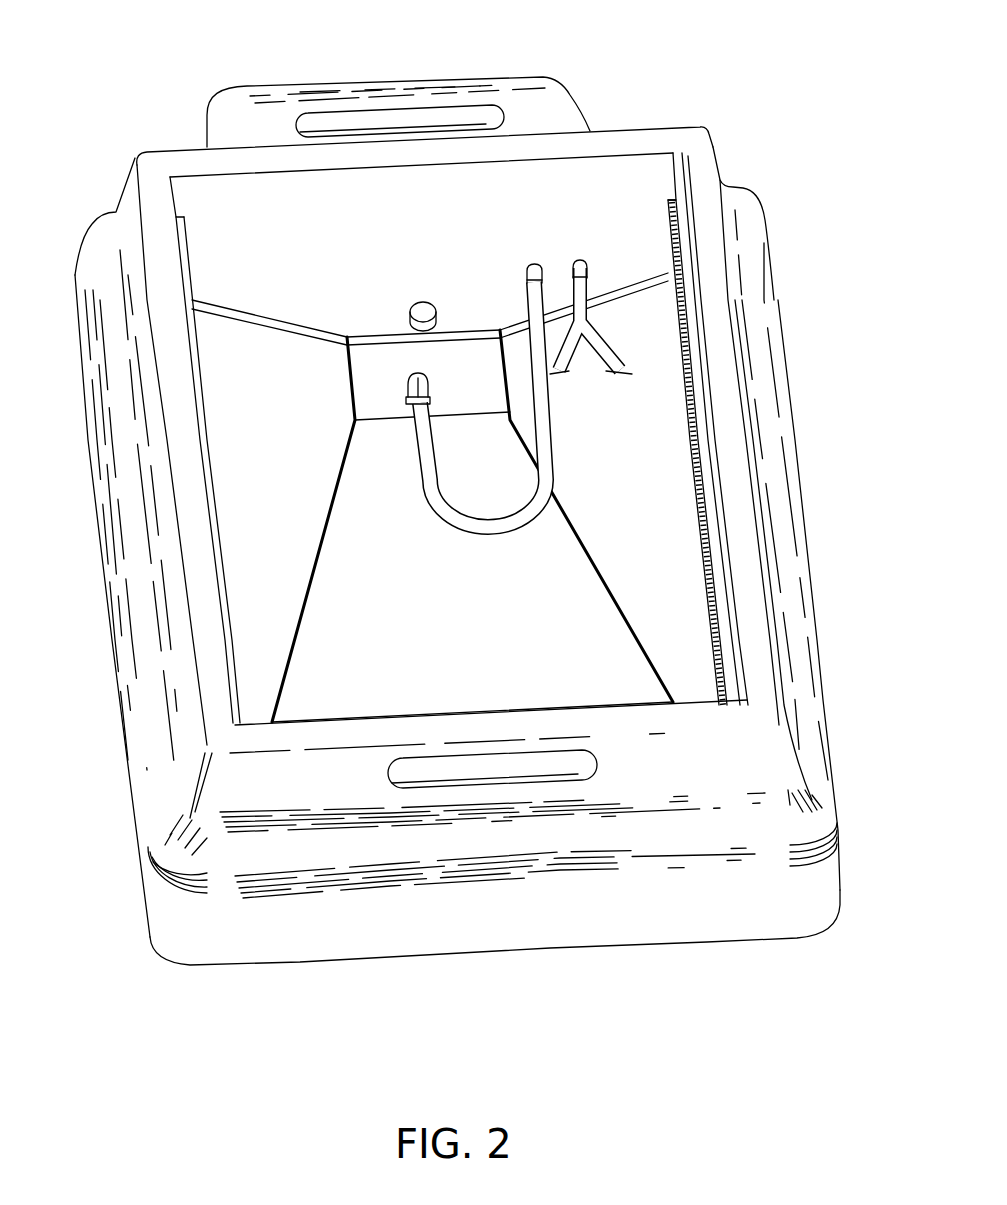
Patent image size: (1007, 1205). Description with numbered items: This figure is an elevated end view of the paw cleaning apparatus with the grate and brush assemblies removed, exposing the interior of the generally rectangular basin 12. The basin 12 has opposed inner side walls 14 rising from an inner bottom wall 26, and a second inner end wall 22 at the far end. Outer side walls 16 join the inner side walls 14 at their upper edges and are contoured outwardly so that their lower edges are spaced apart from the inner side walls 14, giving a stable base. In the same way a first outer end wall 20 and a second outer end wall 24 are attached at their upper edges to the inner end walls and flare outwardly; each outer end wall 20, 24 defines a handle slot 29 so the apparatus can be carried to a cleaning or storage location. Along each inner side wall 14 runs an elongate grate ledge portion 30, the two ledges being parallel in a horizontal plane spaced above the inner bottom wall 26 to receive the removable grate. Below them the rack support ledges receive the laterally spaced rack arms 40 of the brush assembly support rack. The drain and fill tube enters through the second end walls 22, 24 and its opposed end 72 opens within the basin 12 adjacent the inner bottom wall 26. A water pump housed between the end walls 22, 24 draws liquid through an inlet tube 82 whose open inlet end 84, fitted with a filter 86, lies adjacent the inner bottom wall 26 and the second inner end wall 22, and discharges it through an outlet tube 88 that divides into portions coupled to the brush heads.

The basin 12 is at (731, 86).
The inner side walls 14 is at (292, 441).
The outer side walls 16 is at (135, 582).
The first outer end wall 20 is at (552, 98).
The second inner end wall 22 is at (370, 251).
The second outer end wall 24 is at (630, 933).
The inner bottom wall 26 is at (433, 625).
The handle slot 29 is at (400, 115).
The grate ledge portions 30 is at (187, 257).
The rack arms 40 is at (682, 397).
The opposed end 72 is at (427, 308).
The inlet tube 82 is at (515, 533).
The open inlet end 84 is at (417, 378).
The filter 86 is at (400, 387).
The outlet tube 88 is at (597, 292).